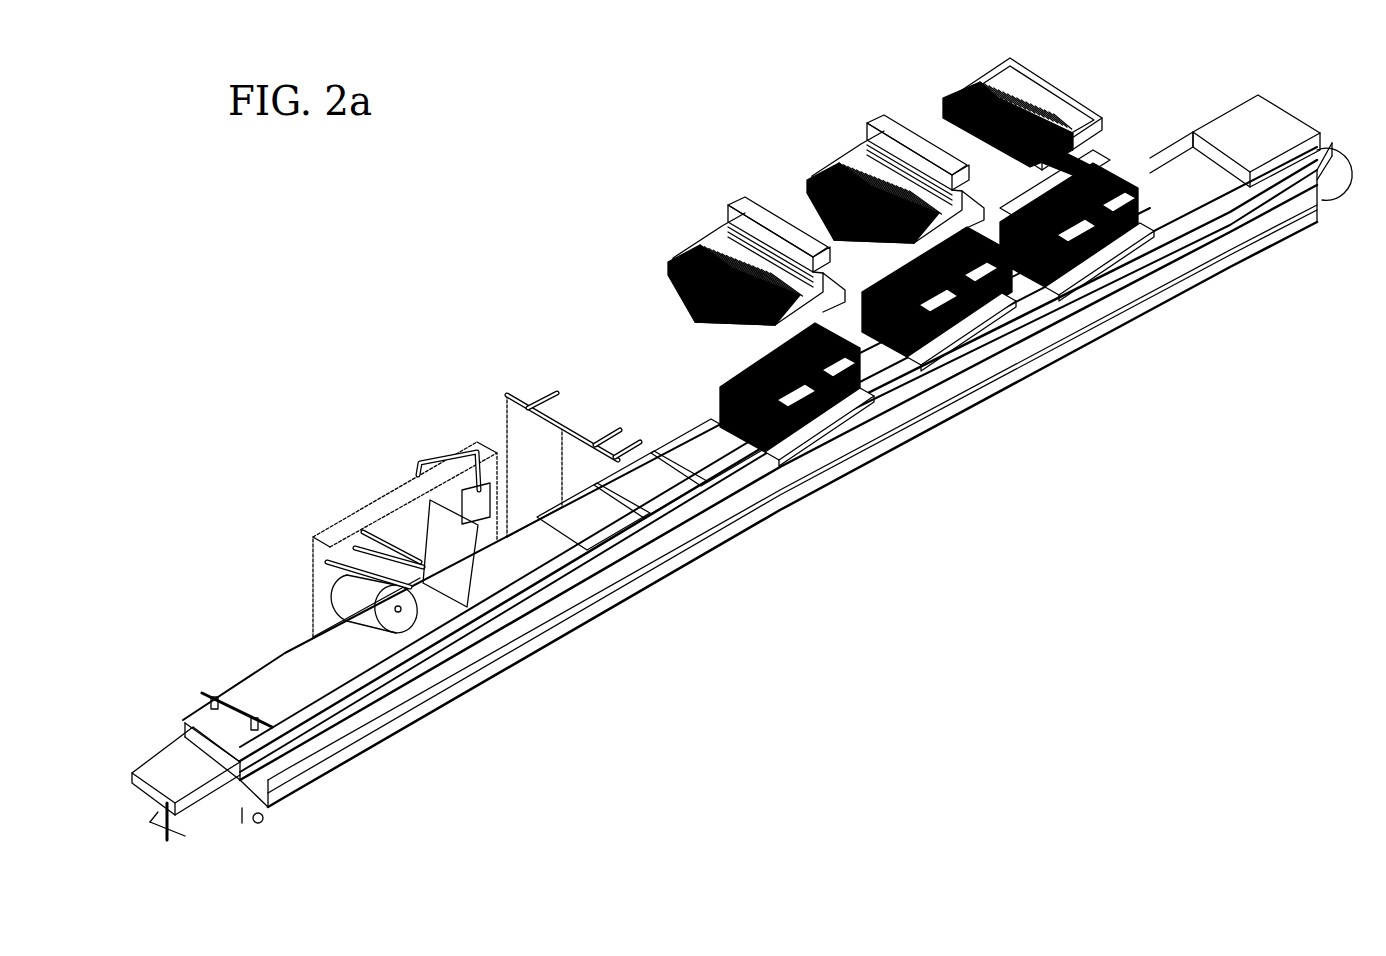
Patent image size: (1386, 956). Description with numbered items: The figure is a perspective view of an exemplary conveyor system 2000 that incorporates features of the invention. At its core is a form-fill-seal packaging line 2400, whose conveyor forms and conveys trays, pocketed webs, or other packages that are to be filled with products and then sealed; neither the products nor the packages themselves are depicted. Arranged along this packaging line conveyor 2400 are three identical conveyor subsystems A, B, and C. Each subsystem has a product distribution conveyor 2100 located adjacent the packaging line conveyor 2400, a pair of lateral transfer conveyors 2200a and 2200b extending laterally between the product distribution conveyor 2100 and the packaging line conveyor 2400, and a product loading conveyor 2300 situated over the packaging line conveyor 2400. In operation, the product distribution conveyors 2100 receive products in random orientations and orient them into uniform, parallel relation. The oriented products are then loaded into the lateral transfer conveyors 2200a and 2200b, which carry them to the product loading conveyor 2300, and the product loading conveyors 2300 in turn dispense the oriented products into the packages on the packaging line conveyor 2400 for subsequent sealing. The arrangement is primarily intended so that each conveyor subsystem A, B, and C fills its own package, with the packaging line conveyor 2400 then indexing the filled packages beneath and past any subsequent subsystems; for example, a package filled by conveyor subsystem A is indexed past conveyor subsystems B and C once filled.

The conveyor system 2000 is at (318, 316).
The product distribution conveyor 2100 is at (1009, 58).
The lateral transfer conveyor 2200a is at (937, 132).
The lateral transfer conveyor 2200b is at (1092, 156).
The product loading conveyor 2300 is at (1094, 254).
The packaging line conveyor 2400 is at (1167, 203).
The conveyor subsystem A is at (967, 70).
The conveyor subsystem B is at (817, 135).
The conveyor subsystem C is at (690, 208).